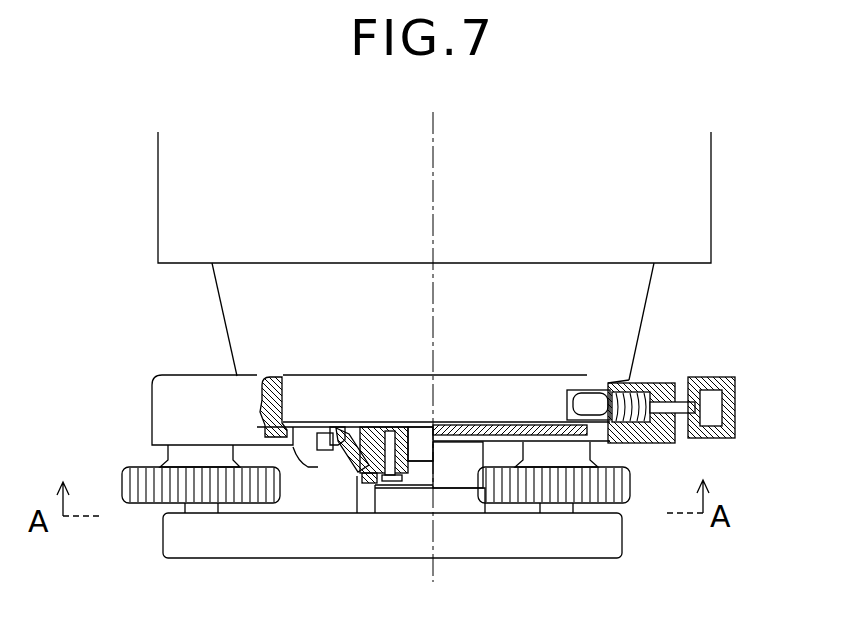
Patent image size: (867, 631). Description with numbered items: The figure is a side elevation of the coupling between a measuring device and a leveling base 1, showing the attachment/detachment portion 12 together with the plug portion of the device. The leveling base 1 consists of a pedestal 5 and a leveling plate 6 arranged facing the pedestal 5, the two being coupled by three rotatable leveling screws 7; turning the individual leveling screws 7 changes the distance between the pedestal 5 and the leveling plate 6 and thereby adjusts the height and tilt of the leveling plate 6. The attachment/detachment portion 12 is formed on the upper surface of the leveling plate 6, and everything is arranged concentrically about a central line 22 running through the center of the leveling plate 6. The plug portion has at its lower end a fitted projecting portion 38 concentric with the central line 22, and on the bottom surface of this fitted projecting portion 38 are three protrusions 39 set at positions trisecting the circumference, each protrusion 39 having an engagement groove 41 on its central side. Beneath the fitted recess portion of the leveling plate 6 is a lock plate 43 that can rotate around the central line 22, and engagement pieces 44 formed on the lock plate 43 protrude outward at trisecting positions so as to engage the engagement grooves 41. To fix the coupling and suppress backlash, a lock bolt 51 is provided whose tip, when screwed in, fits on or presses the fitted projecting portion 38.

The leveling base 1 is at (138, 436).
The pedestal 5 is at (622, 552).
The leveling plate 6 is at (158, 378).
The leveling screw 7 is at (120, 485).
The attachment/detachment portion 12 is at (258, 427).
The central line 22 is at (433, 205).
The fitted projecting portion 38 is at (303, 405).
The protrusion 39 is at (303, 453).
The engagement groove 41 is at (323, 427).
The lock plate 43 is at (358, 478).
The engagement piece 44 is at (324, 452).
The lock bolt 51 is at (733, 438).